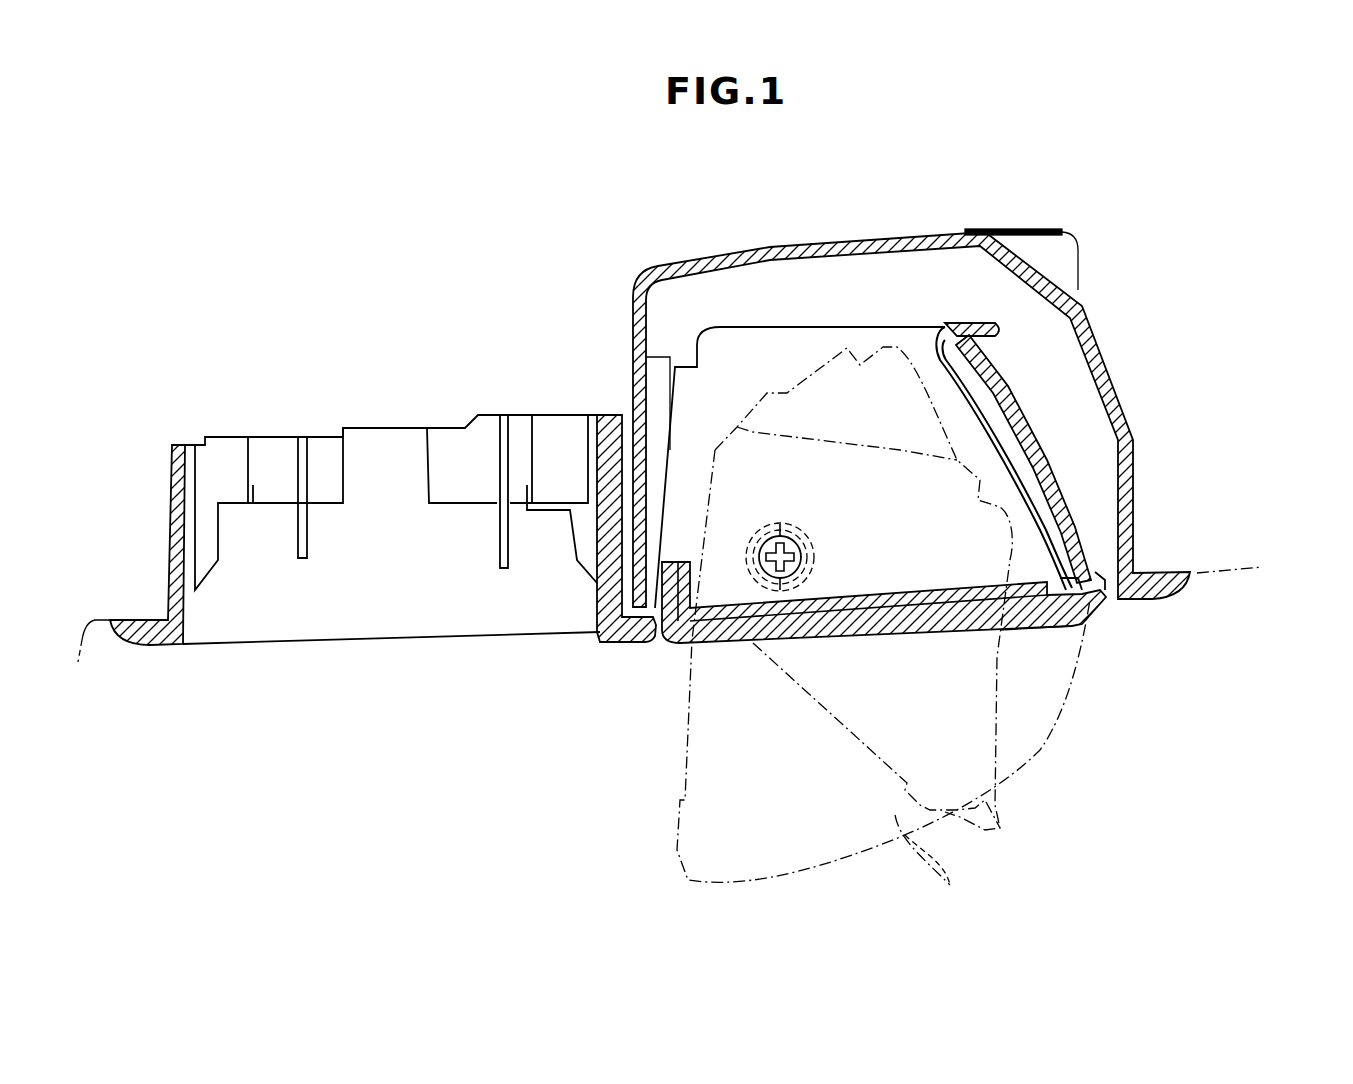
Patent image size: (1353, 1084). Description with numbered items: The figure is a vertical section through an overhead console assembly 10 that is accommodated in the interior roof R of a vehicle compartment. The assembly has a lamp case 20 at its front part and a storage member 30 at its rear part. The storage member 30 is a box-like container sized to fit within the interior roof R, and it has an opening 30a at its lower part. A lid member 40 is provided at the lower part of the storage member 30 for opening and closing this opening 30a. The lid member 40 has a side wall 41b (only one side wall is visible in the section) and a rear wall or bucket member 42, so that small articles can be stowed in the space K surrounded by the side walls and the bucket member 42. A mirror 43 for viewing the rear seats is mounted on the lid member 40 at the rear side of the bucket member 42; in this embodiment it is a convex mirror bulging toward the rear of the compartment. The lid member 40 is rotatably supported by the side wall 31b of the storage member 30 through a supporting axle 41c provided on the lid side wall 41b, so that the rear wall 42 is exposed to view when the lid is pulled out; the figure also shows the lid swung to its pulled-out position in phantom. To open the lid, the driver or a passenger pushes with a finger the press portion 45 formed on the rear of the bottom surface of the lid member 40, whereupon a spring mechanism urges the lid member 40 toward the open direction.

The overhead console assembly 10 is at (1093, 214).
The lamp case 20 is at (433, 364).
The storage member 30 is at (881, 214).
The opening 30a is at (1038, 641).
The side wall 31b is at (936, 287).
The lid member 40 is at (846, 641).
The side wall 41b is at (781, 324).
The supporting axle 41c is at (813, 562).
The rear wall (bucket member) 42 is at (1012, 428).
The mirror 43 is at (1086, 455).
The press portion 45 is at (1058, 622).
The space K is at (920, 436).
The interior roof R is at (1216, 574).